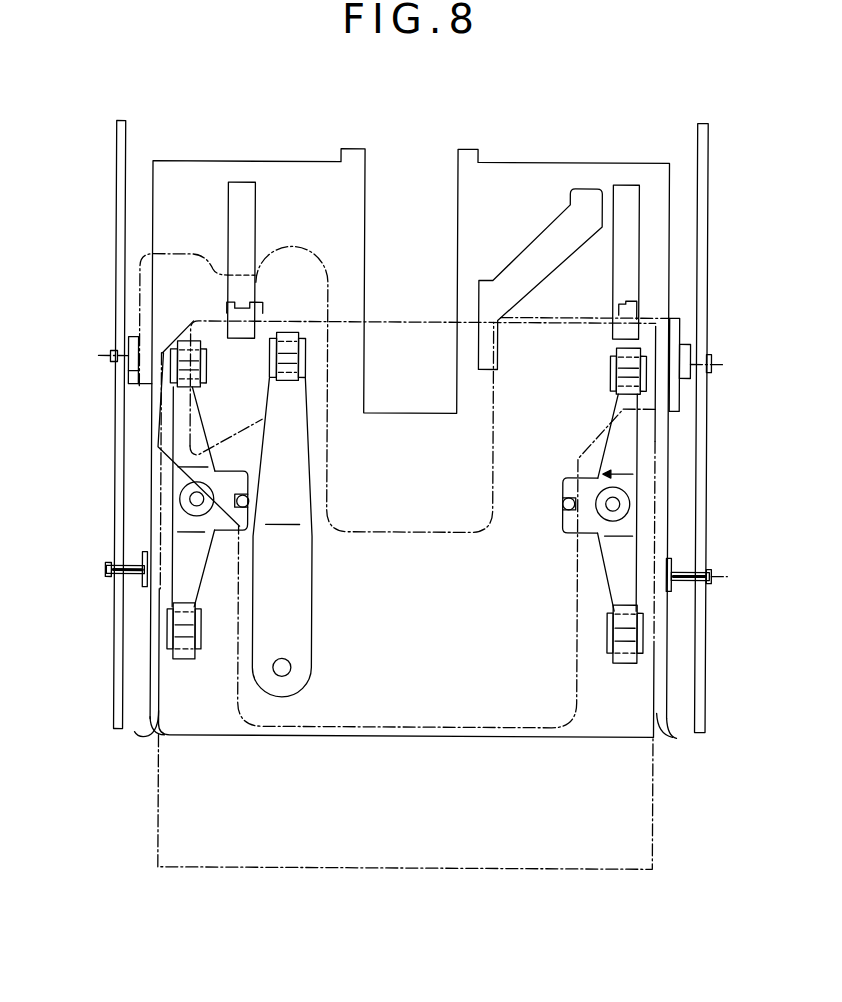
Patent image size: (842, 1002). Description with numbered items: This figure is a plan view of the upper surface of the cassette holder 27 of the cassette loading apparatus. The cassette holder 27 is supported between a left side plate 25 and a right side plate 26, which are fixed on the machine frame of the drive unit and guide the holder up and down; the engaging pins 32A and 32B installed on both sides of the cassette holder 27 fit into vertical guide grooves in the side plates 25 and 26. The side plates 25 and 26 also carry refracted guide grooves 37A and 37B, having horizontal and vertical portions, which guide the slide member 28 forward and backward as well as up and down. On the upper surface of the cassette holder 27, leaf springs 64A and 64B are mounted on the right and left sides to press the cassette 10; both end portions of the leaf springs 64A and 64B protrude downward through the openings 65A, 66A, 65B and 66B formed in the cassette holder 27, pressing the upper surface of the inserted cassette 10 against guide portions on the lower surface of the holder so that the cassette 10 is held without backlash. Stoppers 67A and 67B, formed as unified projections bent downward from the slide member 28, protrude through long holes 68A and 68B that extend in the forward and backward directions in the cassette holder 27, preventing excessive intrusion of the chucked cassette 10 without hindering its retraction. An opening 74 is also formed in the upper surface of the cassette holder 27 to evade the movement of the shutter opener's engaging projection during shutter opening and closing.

The cassette 10 is at (355, 870).
The left side plate 25 is at (113, 483).
The right side plate 26 is at (708, 489).
The cassette holder 27 is at (285, 738).
The slide member 28 is at (577, 697).
The engaging pin 32A is at (107, 572).
The engaging pin 32B is at (728, 576).
The guide groove 37A is at (110, 358).
The guide groove 37B is at (730, 363).
The leaf spring 64A is at (186, 556).
The leaf spring 64B is at (620, 559).
The opening 65A is at (207, 642).
The opening 65B is at (607, 632).
The opening 66A is at (206, 376).
The opening 66B is at (610, 370).
The stopper 67A is at (242, 304).
The stopper 67B is at (628, 302).
The long hole 68A is at (255, 202).
The long hole 68B is at (616, 207).
The opening 74 is at (527, 247).